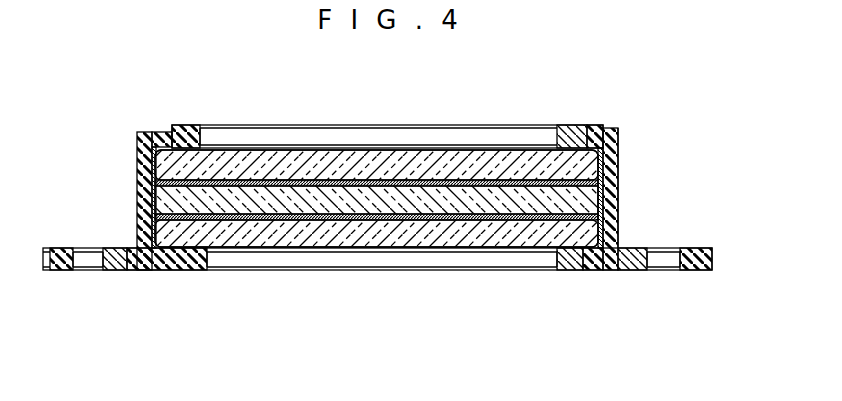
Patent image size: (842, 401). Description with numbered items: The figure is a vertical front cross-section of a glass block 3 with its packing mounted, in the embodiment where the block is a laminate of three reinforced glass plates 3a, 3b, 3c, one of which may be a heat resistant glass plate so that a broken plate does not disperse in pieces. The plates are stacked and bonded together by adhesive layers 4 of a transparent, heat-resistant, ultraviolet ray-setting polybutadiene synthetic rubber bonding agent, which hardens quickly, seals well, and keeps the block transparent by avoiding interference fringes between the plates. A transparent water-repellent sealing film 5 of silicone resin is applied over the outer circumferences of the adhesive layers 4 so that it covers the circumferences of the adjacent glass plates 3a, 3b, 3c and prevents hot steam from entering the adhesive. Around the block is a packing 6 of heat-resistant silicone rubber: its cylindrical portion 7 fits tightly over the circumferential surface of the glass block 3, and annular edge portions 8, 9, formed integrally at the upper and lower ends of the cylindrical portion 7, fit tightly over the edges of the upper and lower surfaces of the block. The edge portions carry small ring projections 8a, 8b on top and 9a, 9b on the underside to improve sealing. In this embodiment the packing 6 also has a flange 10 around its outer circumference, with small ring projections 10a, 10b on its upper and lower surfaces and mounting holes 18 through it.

The glass block 3 is at (329, 157).
The reinforced glass plate 3a is at (455, 160).
The reinforced glass plate 3b is at (418, 205).
The reinforced glass plate 3c is at (283, 238).
The adhesive layer 4 is at (379, 182).
The sealing film 5 is at (604, 183).
The packing 6 is at (618, 128).
The cylindrical portion 7 is at (620, 155).
The annular edge portion 8 is at (567, 135).
The small ring projection 8a is at (584, 130).
The small ring projection 8b is at (600, 131).
The annular edge portion 9 is at (557, 263).
The small ring projection 9a is at (602, 262).
The small ring projection 9b is at (584, 268).
The flange 10 is at (704, 263).
The small ring projection 10a is at (74, 258).
The small ring projection 10b is at (62, 268).
The mounting hole 18 is at (90, 264).